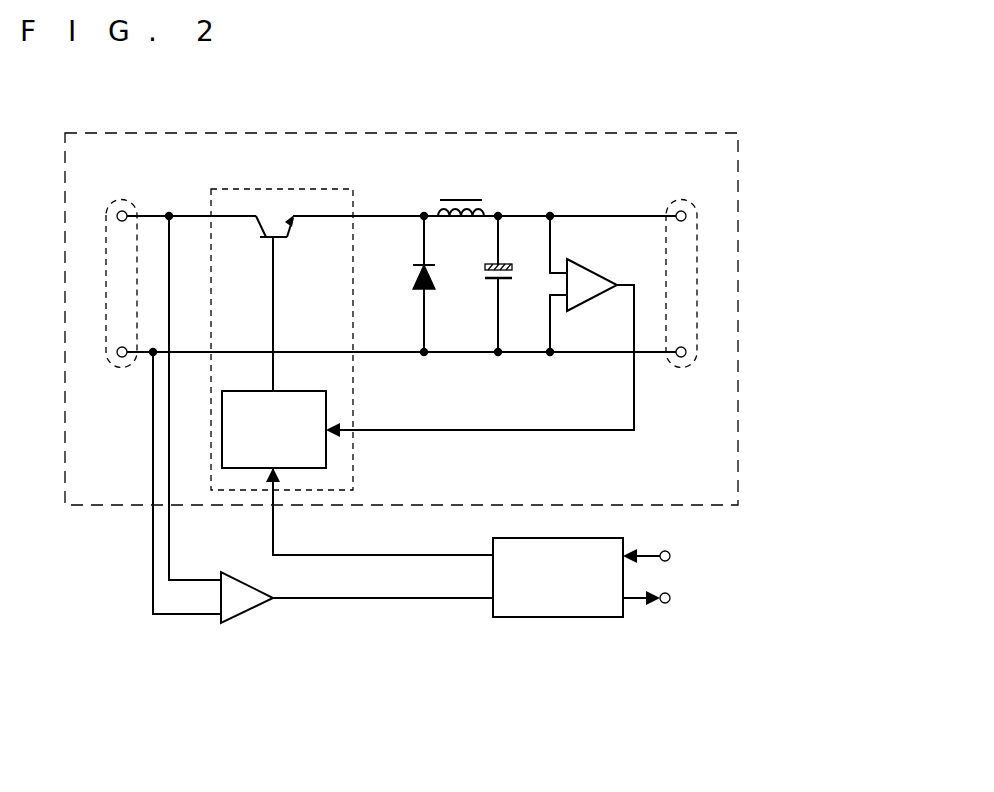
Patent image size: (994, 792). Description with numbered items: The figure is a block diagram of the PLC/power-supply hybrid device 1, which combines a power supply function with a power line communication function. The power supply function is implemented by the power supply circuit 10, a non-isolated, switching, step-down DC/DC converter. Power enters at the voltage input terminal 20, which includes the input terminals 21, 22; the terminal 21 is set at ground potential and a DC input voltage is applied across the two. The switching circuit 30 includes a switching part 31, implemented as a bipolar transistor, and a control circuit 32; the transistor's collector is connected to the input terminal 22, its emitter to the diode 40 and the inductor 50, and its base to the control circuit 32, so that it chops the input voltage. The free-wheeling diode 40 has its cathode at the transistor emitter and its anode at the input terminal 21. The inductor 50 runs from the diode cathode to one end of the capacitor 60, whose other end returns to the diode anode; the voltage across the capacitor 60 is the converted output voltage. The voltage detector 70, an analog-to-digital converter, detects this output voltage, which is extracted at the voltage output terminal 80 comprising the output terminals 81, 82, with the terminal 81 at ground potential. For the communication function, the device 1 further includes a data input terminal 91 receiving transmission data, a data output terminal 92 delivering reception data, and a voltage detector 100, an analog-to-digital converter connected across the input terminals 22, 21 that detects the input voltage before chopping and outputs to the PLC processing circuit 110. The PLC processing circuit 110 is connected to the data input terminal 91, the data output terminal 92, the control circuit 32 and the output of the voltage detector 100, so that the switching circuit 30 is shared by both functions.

The hybrid device 1 is at (116, 102).
The power supply circuit 10 is at (272, 133).
The voltage input terminal 20 is at (120, 200).
The input terminal 21 is at (116, 356).
The input terminal 22 is at (116, 214).
The switching circuit 30 is at (353, 197).
The switching part 31 is at (295, 232).
The control circuit 32 is at (290, 391).
The diode 40 is at (413, 270).
The inductor 50 is at (458, 197).
The capacitor 60 is at (484, 272).
The voltage detector 70 is at (581, 263).
The voltage output terminal 80 is at (682, 200).
The output terminal 81 is at (688, 356).
The output terminal 82 is at (688, 215).
The data input terminal 91 is at (668, 551).
The data output terminal 92 is at (668, 603).
The voltage detector 100 is at (247, 610).
The PLC processing circuit 110 is at (548, 617).